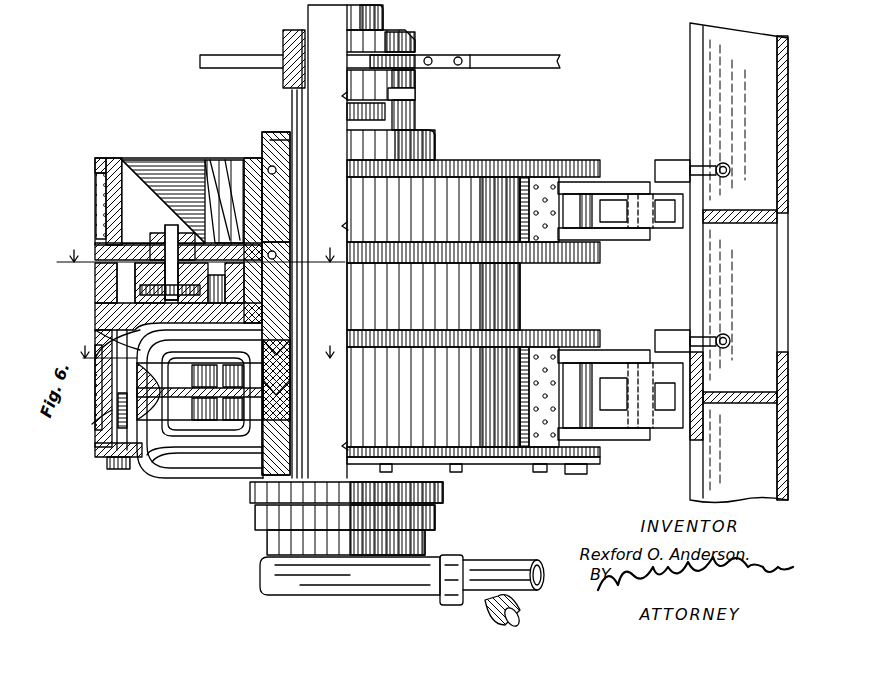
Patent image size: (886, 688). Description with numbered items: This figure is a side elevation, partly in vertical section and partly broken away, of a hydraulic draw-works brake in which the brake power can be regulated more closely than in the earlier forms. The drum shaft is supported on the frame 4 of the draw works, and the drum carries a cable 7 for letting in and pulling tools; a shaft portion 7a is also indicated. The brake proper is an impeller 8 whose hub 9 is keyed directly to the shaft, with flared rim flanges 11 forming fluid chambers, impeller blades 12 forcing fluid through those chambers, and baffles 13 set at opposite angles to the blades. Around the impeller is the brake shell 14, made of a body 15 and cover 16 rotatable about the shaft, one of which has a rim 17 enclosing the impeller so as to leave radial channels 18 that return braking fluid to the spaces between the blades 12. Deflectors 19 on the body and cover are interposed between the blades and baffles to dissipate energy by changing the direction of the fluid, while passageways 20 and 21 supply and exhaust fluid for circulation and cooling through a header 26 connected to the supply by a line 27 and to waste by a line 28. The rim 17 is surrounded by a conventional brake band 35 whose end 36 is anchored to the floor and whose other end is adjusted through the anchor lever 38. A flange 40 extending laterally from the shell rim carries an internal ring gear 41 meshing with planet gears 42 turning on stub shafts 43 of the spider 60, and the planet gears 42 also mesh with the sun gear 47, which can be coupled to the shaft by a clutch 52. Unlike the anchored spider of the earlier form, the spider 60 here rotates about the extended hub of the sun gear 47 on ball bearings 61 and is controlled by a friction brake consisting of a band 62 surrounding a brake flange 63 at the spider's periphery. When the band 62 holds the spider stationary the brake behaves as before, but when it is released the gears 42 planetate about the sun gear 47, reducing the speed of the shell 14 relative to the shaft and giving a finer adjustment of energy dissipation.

The frame 4 is at (698, 97).
The cable 7 is at (202, 241).
The shaft portion 7a is at (210, 365).
The impeller 8 is at (97, 452).
The hub 9 is at (252, 482).
The rim flanges 11 is at (150, 470).
The impeller blades 12 is at (237, 464).
The baffles 13 is at (165, 472).
The brake shell 14 is at (568, 473).
The body 15 is at (112, 345).
The cover 16 is at (110, 468).
The rim 17 is at (86, 428).
The radial channels 18 is at (202, 475).
The deflectors 19 is at (214, 469).
The passageway 20 is at (93, 389).
The passageway 21 is at (188, 472).
The header 26 is at (258, 528).
The line 27 is at (490, 560).
The line 28 is at (488, 607).
The brake band 35 is at (536, 472).
The end 36 is at (595, 462).
The anchor lever 38 is at (608, 428).
The flange 40 is at (95, 228).
The internal ring gear 41 is at (97, 305).
The planet gears 42 is at (150, 160).
The stub shafts 43 is at (172, 160).
The sun gear 47 is at (190, 160).
The clutch 52 is at (276, 70).
The spider 60 is at (212, 160).
The ball bearings 61 is at (262, 145).
The band 62 is at (96, 178).
The brake flange 63 is at (112, 158).